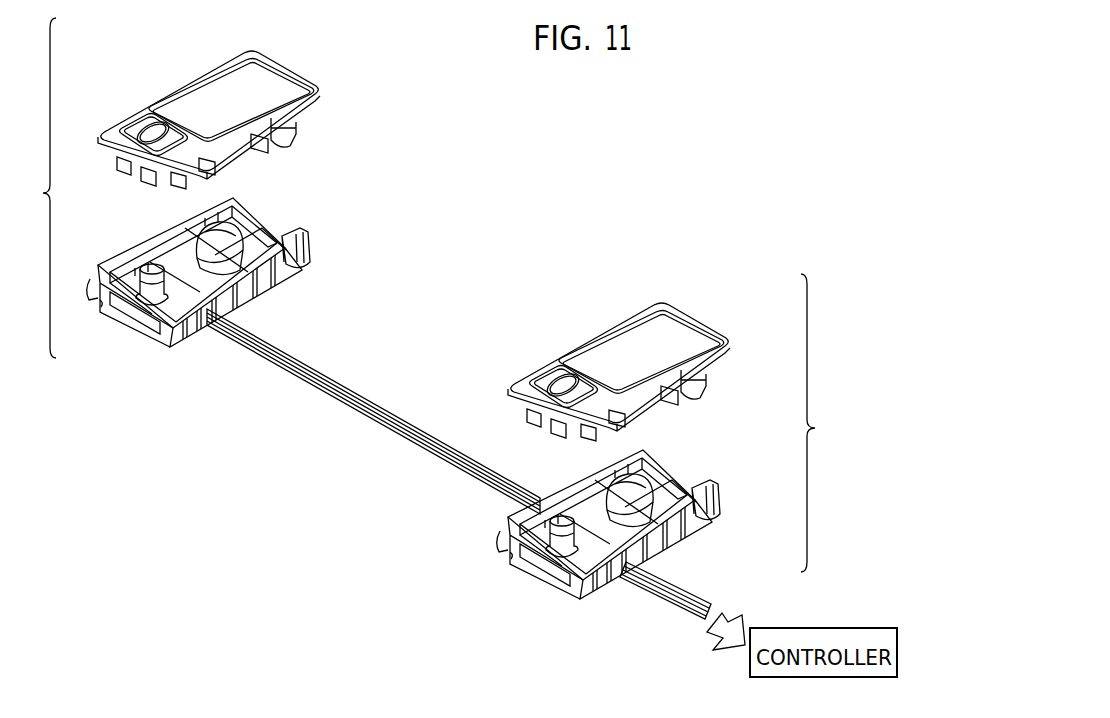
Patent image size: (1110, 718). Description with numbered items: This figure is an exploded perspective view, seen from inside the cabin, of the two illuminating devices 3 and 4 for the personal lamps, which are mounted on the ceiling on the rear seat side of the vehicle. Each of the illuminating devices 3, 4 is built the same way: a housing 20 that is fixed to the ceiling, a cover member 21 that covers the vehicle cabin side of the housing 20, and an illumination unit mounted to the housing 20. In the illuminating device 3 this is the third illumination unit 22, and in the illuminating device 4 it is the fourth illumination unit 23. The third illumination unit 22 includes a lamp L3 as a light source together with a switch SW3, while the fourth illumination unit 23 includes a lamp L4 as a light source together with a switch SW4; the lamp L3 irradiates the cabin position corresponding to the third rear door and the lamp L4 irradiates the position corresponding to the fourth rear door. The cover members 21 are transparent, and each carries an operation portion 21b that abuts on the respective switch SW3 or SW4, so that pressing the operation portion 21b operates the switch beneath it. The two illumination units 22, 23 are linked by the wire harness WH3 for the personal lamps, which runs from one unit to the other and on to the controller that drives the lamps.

The illuminating device for personal lamp 3 is at (816, 423).
The illuminating device for personal lamp 4 is at (41, 188).
The housing 20 is at (279, 130).
The cover member 21 is at (208, 108).
The operation portion 21b is at (158, 126).
The third illumination unit 22 is at (719, 487).
The fourth illumination unit 23 is at (305, 234).
The lamp L3 is at (650, 494).
The lamp L4 is at (237, 242).
The switch SW3 is at (557, 570).
The switch SW4 is at (147, 318).
The wire harness for personal lamps WH3 is at (402, 417).